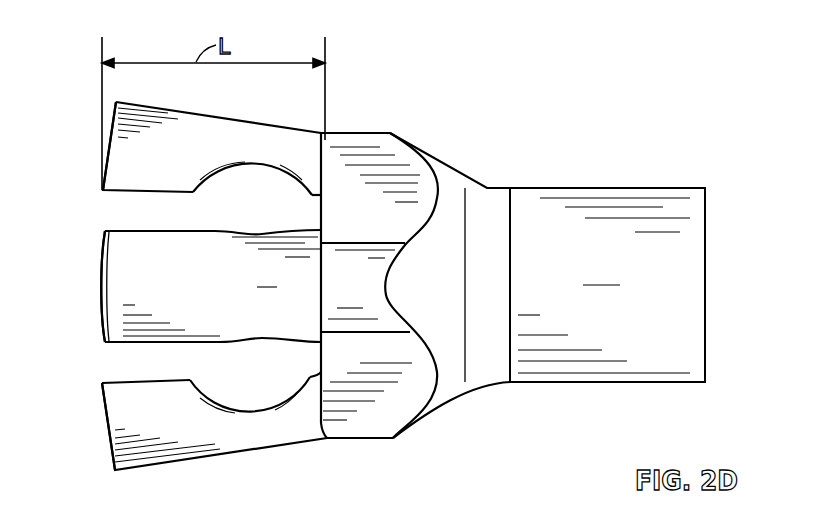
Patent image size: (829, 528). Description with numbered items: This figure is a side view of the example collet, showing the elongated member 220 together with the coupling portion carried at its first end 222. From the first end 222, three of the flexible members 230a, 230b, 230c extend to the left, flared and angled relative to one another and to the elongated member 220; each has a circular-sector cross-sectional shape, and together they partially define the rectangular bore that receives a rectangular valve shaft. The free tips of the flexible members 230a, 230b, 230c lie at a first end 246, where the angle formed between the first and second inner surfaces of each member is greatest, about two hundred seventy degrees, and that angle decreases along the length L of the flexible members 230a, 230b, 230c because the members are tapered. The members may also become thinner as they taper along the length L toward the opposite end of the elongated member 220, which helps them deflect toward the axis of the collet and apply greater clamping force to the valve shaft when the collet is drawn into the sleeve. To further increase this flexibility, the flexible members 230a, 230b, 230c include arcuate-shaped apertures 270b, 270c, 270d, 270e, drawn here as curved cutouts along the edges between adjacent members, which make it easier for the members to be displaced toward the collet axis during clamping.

The elongated member 220 is at (618, 205).
The first end 222 is at (489, 184).
The flexible member 230a is at (126, 157).
The flexible member 230b is at (125, 312).
The flexible member 230c is at (126, 452).
The first end 246 is at (108, 140).
The arcuate-shaped aperture 270b is at (262, 162).
The arcuate-shaped aperture 270c is at (262, 232).
The arcuate-shaped aperture 270d is at (258, 343).
The arcuate-shaped aperture 270e is at (245, 411).